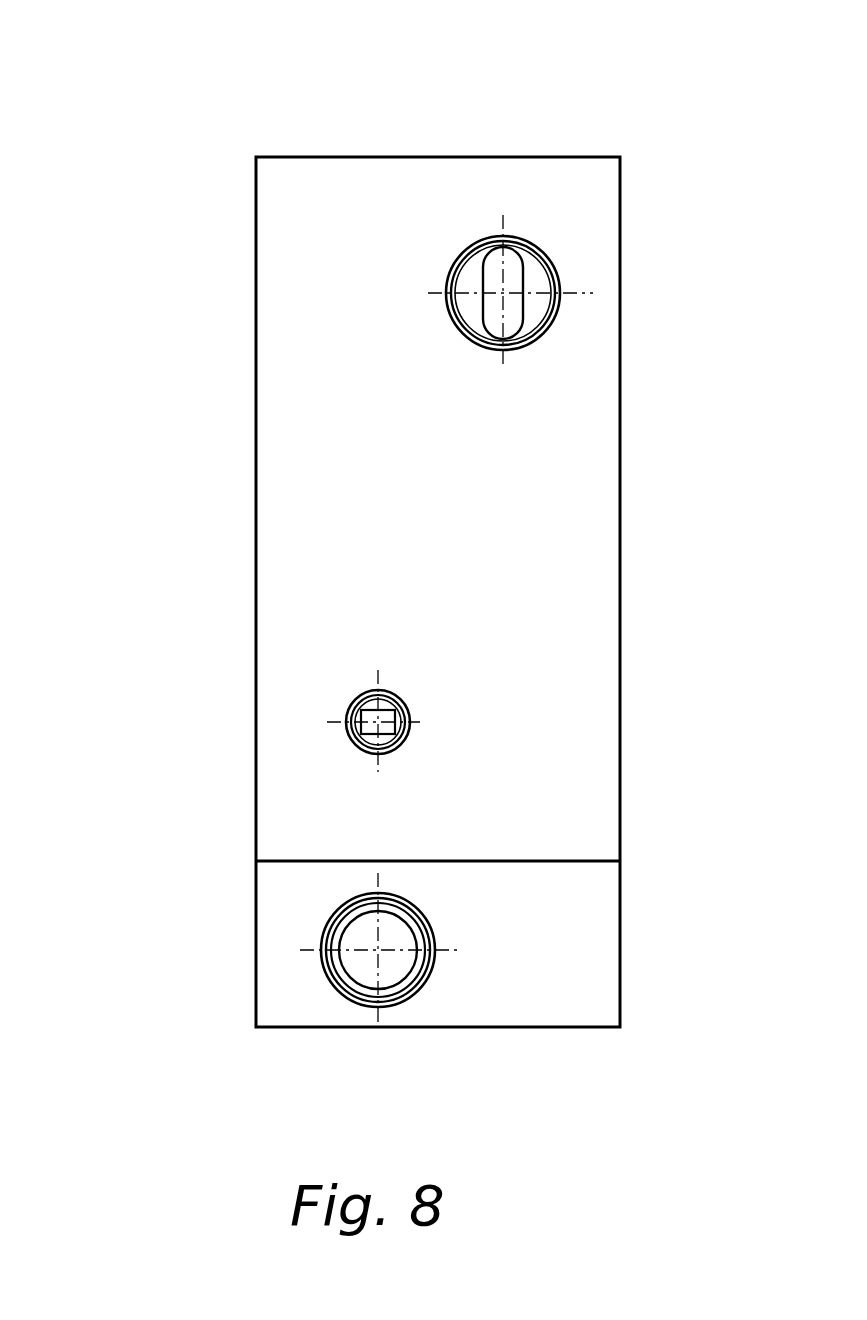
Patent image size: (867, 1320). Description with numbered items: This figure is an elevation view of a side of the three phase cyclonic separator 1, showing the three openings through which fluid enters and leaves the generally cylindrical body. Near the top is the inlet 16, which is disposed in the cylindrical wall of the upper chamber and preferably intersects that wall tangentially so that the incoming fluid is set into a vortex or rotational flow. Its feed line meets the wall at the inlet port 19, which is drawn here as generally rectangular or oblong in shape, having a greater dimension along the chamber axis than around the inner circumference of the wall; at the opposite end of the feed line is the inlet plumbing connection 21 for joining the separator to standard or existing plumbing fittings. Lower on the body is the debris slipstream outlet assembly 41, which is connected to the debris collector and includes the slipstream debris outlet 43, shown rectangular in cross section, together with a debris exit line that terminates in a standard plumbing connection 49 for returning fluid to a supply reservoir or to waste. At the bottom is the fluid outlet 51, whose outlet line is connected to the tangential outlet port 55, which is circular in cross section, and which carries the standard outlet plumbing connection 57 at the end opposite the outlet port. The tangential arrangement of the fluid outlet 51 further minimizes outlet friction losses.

The three phase cyclonic separator 1 is at (120, 177).
The inlet 16 is at (553, 327).
The inlet port 19 is at (512, 283).
The inlet plumbing connection 21 is at (483, 250).
The debris slipstream outlet assembly 41 is at (403, 697).
The slipstream debris outlet 43 is at (370, 717).
The standard plumbing connection 49 is at (405, 745).
The fluid outlet 51 is at (435, 932).
The tangential outlet port 55 is at (350, 940).
The standard outlet plumbing connection 57 is at (417, 993).